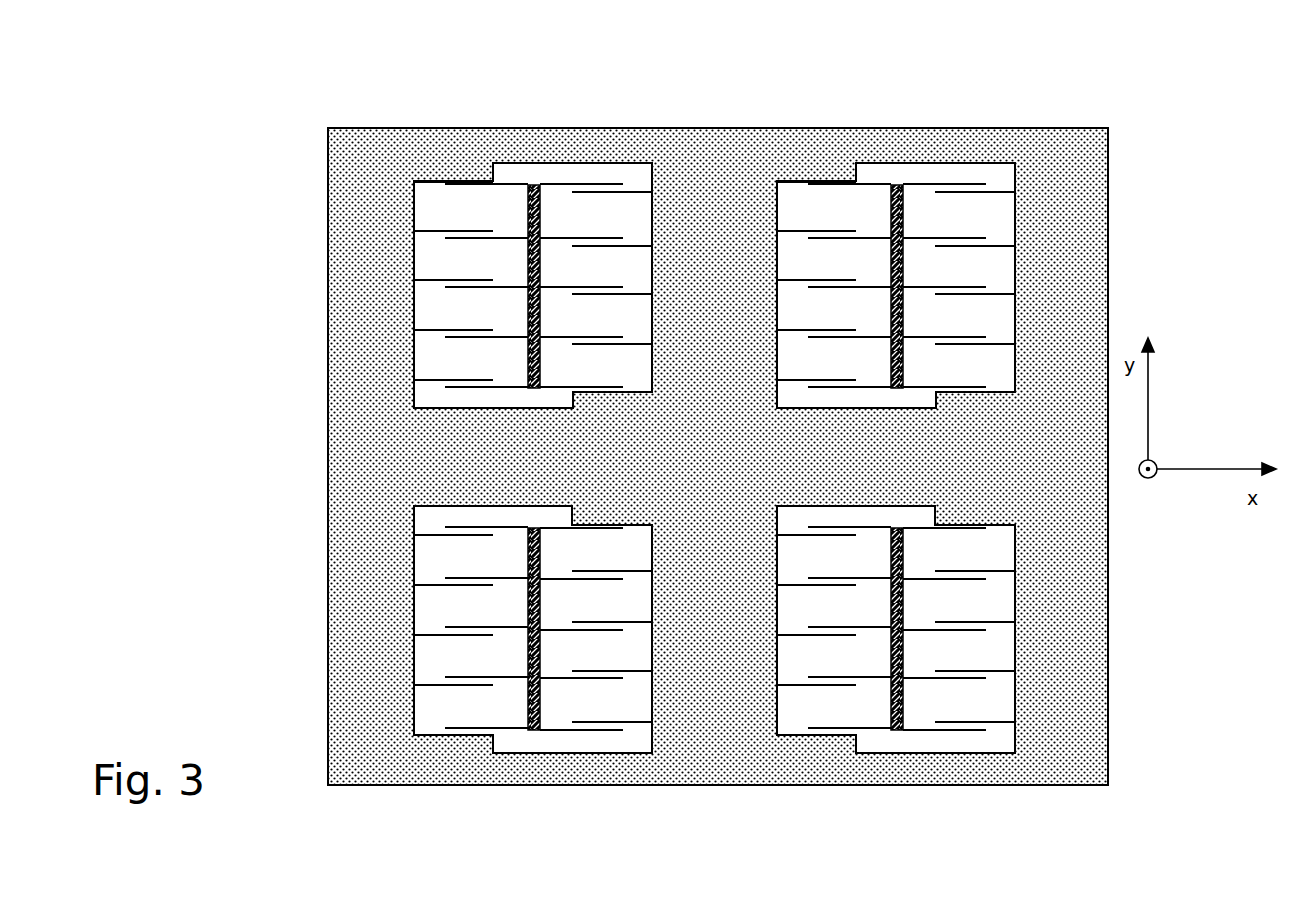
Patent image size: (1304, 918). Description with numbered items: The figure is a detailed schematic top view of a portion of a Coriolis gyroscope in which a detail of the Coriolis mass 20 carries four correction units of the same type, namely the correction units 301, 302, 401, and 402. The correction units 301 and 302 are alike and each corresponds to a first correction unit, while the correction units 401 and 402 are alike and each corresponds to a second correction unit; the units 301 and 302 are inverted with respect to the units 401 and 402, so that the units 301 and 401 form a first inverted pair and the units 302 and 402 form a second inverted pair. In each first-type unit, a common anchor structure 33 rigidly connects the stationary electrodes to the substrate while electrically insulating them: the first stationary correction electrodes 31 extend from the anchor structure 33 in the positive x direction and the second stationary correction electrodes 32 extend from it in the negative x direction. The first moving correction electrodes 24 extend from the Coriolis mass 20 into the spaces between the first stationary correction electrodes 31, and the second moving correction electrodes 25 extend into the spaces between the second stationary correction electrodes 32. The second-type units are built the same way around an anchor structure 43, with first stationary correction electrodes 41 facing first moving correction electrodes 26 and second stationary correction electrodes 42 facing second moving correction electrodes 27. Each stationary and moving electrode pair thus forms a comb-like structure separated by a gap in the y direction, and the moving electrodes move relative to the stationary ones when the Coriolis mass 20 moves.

The Coriolis mass 20 is at (1063, 129).
The first correction unit 301 is at (474, 118).
The first correction unit 302 is at (897, 118).
The second correction unit 401 is at (495, 796).
The second correction unit 402 is at (858, 796).
The anchor structure 33 is at (897, 185).
The anchor structure 43 is at (916, 818).
The second moving correction electrodes 25 is at (432, 232).
The second stationary correction electrodes 32 is at (507, 237).
The first moving correction electrodes 24 is at (987, 353).
The first stationary correction electrodes 31 is at (1015, 270).
The second moving correction electrodes 27 is at (472, 538).
The second stationary correction electrodes 42 is at (505, 627).
The first moving correction electrodes 26 is at (985, 572).
The first stationary correction electrodes 41 is at (950, 633).